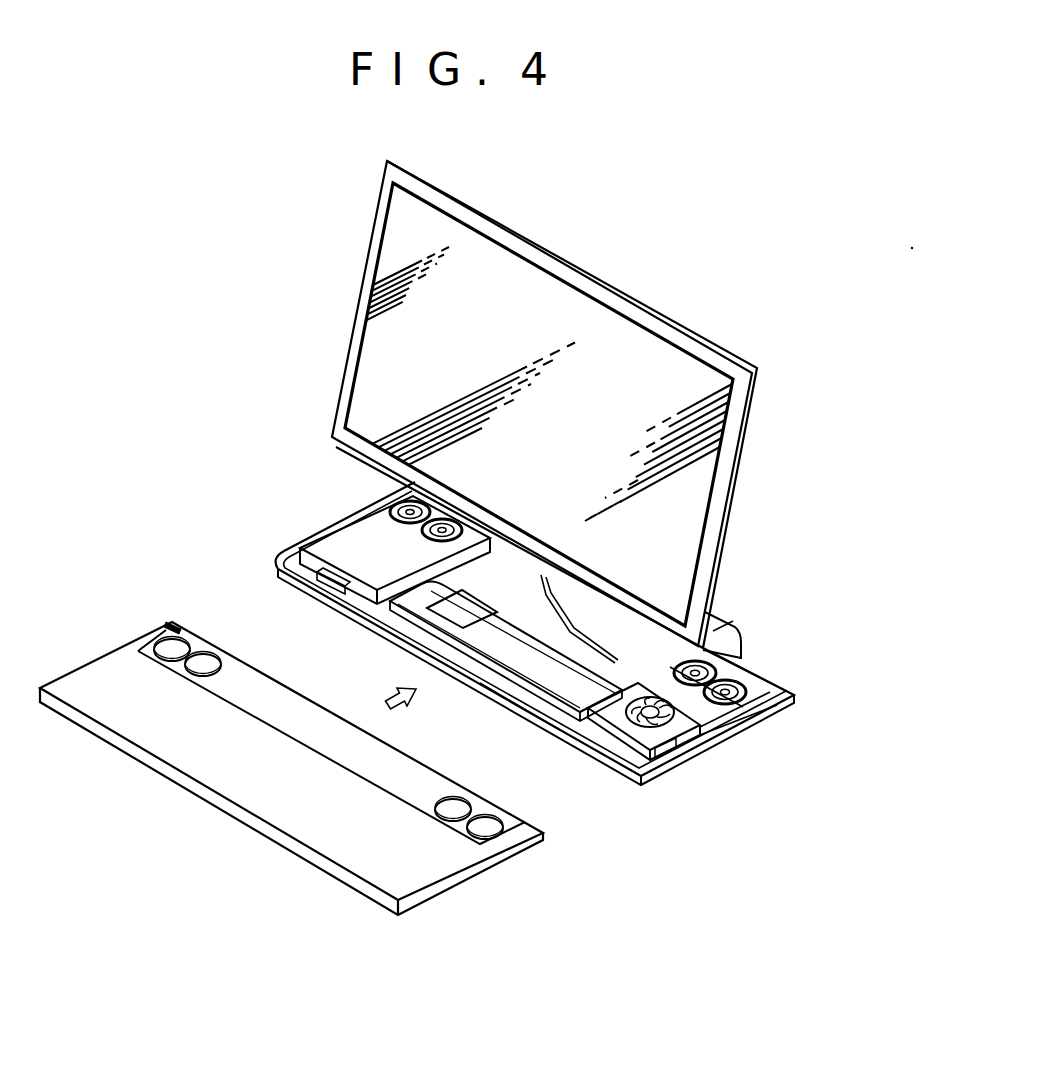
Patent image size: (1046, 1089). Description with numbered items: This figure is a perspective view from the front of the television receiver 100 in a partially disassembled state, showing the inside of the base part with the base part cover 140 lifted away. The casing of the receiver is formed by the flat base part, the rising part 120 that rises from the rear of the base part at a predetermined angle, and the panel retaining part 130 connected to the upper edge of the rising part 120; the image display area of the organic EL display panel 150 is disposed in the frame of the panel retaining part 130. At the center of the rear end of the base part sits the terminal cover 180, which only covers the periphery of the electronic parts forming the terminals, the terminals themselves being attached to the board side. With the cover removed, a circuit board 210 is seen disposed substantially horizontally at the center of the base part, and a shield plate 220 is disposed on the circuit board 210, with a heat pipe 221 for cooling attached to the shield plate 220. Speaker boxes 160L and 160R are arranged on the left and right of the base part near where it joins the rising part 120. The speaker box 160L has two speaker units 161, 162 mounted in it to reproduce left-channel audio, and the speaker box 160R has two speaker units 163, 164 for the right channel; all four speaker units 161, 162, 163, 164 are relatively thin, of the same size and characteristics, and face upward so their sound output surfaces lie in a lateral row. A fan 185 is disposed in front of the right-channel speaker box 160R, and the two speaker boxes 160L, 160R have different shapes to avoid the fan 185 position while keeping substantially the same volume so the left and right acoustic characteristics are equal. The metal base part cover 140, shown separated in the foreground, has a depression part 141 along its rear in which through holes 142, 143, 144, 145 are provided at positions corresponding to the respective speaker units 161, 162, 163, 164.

The television receiver 100 is at (607, 285).
The panel retaining part 130 is at (748, 424).
The display panel 150 is at (675, 505).
The terminal cover 180 is at (714, 627).
The rising part 120 is at (784, 690).
The circuit board 210 is at (557, 708).
The shield plate 220 is at (473, 635).
The heat pipe 221 is at (520, 612).
The speaker box 160L is at (300, 548).
The speaker unit 161 is at (390, 505).
The speaker unit 162 is at (420, 531).
The speaker box 160R is at (743, 717).
The speaker unit 163 is at (716, 666).
The speaker unit 164 is at (778, 703).
The fan 185 is at (663, 732).
The base part cover 140 is at (417, 860).
The depression part 141 is at (302, 742).
The through hole 142 is at (194, 638).
The through hole 143 is at (221, 655).
The through hole 144 is at (463, 800).
The through hole 145 is at (497, 817).